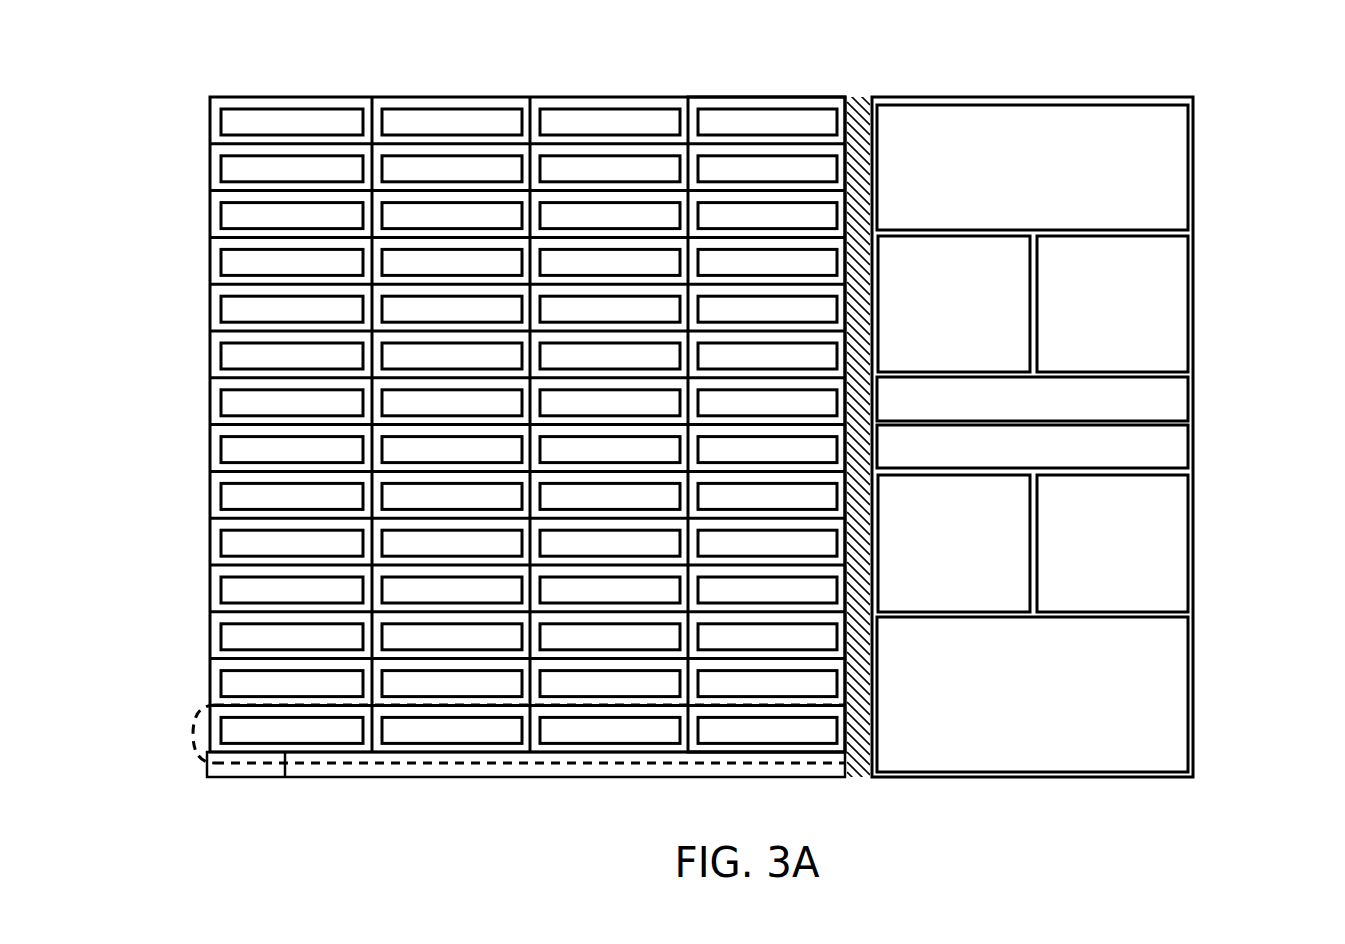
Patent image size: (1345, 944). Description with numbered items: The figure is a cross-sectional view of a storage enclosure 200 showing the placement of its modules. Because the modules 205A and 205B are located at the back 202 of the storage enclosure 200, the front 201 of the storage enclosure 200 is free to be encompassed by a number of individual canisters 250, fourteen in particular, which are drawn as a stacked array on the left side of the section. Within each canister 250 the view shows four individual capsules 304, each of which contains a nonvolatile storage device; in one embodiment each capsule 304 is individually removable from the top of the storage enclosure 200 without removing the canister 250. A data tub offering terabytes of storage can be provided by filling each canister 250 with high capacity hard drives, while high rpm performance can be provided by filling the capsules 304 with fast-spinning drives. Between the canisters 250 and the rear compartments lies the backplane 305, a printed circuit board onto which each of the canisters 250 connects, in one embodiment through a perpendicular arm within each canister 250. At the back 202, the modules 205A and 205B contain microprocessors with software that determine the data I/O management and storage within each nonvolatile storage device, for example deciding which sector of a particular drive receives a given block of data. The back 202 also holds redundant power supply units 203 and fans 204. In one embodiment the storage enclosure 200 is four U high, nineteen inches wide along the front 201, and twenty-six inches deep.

The storage enclosure 200 is at (721, 456).
The front of the storage enclosure 201 is at (180, 97).
The back of the storage enclosure 202 is at (1262, 97).
The redundant power supply units 203 is at (1178, 166).
The fans 204 is at (1178, 332).
The module 205A is at (1178, 447).
The module 205B is at (1178, 392).
The individual canister 250 is at (585, 752).
The capsule 304 is at (687, 92).
The backplane 305 is at (862, 97).